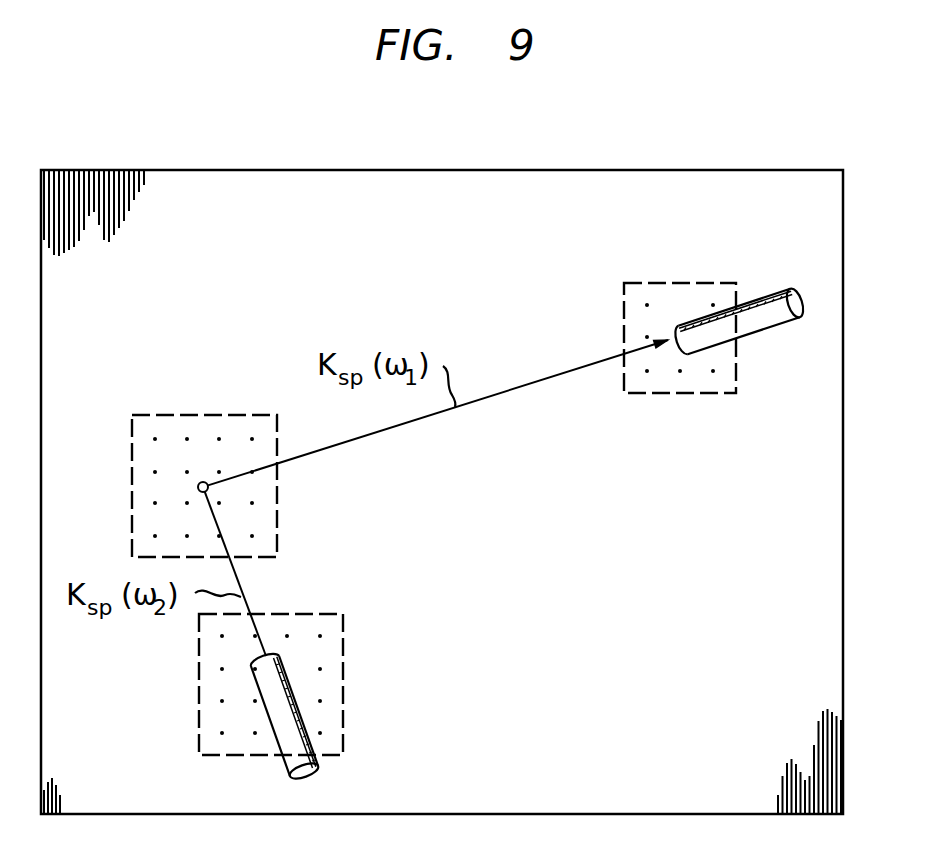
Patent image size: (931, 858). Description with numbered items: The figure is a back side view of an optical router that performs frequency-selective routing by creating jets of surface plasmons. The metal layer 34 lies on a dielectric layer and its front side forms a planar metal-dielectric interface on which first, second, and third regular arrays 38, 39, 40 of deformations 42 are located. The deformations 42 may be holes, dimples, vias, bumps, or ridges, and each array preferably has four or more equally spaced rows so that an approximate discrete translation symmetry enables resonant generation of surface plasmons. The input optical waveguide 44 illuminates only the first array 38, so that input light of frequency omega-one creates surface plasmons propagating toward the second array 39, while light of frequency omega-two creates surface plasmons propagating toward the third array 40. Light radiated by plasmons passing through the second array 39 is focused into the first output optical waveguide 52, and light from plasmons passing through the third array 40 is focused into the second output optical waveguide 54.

The metal layer 34 is at (729, 731).
The first regular array of deformations 38 is at (277, 553).
The second regular array of deformations 39 is at (736, 393).
The third regular array of deformations 40 is at (343, 752).
The deformations 42 is at (155, 470).
The input optical waveguide 44 is at (203, 481).
The first output optical waveguide 52 is at (770, 327).
The second output optical waveguide 54 is at (287, 773).